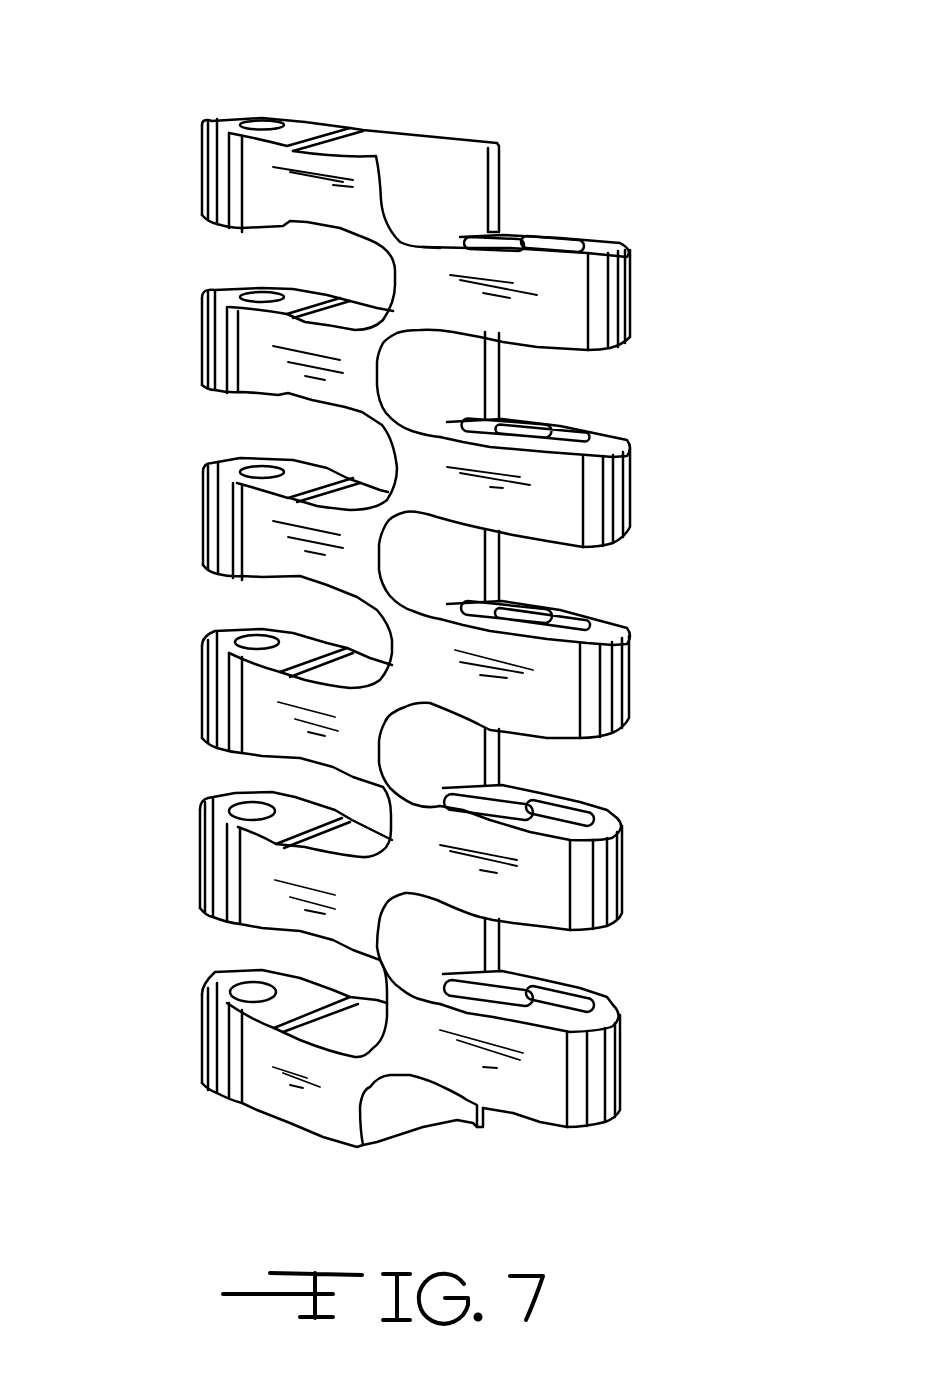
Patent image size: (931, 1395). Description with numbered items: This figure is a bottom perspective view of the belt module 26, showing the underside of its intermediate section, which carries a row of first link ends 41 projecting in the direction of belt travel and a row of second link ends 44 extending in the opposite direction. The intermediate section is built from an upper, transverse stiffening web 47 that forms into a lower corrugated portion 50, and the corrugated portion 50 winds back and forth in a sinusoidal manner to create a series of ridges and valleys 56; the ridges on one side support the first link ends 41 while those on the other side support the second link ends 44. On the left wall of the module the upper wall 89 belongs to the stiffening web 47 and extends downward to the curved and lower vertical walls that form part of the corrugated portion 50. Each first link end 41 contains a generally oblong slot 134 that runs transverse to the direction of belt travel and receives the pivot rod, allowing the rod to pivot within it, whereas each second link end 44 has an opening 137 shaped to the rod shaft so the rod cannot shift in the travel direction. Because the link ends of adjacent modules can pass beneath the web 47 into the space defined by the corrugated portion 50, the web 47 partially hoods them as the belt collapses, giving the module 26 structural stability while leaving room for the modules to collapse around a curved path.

The belt module 26 is at (415, 574).
The first link ends 41 is at (570, 683).
The second link ends 44 is at (247, 695).
The stiffening web 47 is at (470, 750).
The corrugated portion 50 is at (390, 415).
The valleys 56 is at (490, 477).
The upper wall 89 is at (489, 943).
The slot 134 is at (570, 617).
The openings 137 is at (258, 472).